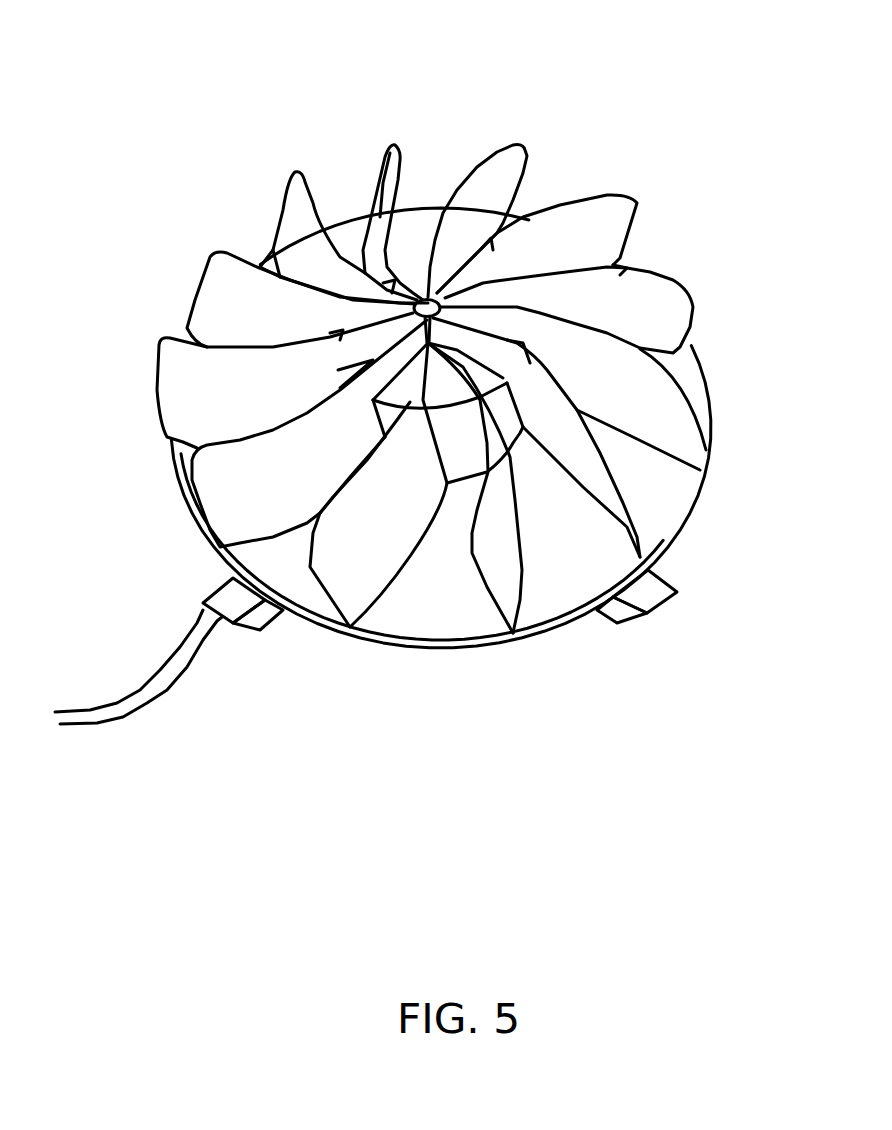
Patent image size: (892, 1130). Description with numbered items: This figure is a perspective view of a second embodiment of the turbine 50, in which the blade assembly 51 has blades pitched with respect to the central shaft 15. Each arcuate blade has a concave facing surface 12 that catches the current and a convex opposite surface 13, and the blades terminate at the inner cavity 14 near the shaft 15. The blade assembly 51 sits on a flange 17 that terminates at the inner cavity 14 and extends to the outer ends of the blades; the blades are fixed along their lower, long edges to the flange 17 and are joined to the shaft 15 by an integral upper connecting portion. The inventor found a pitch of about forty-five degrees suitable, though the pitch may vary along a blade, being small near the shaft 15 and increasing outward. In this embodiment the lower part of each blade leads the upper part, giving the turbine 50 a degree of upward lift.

The concave facing surface 12 is at (672, 425).
The convex opposite surface 13 is at (285, 220).
The inner cavity 14 is at (415, 275).
The shaft 15 is at (428, 298).
The flange 17 is at (437, 608).
The turbine 50 is at (638, 153).
The blade assembly 51 is at (677, 295).